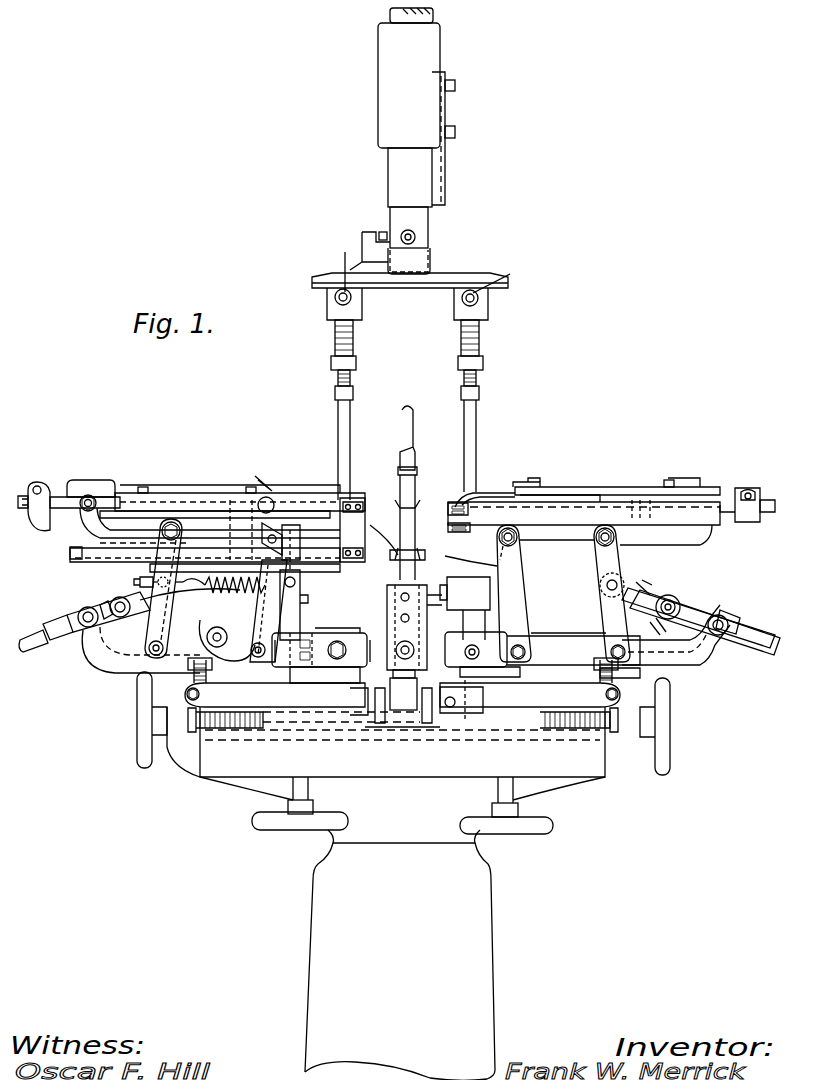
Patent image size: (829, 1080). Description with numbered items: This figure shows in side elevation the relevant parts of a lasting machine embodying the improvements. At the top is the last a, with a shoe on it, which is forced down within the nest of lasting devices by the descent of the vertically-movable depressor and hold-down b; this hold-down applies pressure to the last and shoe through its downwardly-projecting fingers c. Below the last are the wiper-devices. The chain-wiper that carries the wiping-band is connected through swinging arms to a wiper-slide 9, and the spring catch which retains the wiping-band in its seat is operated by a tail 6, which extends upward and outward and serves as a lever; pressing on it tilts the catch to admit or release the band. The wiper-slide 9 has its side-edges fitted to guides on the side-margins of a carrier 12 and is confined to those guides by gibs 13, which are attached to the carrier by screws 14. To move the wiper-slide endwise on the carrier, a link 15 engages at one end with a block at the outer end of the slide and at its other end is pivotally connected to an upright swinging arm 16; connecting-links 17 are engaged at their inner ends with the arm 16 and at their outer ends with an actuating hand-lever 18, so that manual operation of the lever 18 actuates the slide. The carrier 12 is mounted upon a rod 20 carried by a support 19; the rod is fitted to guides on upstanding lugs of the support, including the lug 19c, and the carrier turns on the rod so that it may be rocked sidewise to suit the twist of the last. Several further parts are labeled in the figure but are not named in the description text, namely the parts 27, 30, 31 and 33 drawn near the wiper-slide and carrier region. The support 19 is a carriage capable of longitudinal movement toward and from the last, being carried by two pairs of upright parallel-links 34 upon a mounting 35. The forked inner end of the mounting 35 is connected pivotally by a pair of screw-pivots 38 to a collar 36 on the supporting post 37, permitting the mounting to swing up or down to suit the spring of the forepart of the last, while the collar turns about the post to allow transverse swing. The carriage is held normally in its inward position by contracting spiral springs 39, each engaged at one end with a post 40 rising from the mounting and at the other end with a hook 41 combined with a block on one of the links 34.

The tail 6 is at (270, 483).
The wiper-slide 9 is at (215, 492).
The carrier 12 is at (176, 496).
The gibs 13 is at (158, 488).
The screws 14 is at (143, 486).
The link 15 is at (93, 522).
The upright swinging arm 16 is at (268, 600).
The connecting-links 17 is at (182, 596).
The actuating hand-lever 18 is at (35, 626).
The support 19 is at (45, 527).
The upstanding lug 19c is at (37, 484).
The rod 20 is at (62, 496).
The bracket 27 is at (301, 500).
The connection 30 is at (340, 540).
The bolt 31 is at (323, 560).
The bar 33 is at (72, 558).
The upright parallel-links 34 is at (150, 570).
The mounting 35 is at (122, 672).
The collar 36 is at (358, 642).
The supporting post 37 is at (325, 628).
The screw-pivots 38 is at (342, 642).
The contracting spiral springs 39 is at (245, 590).
The post 40 is at (302, 600).
The hook 41 is at (134, 582).
The last a is at (425, 505).
The depressor and hold-down b is at (478, 273).
The downwardly-projecting fingers c is at (336, 411).